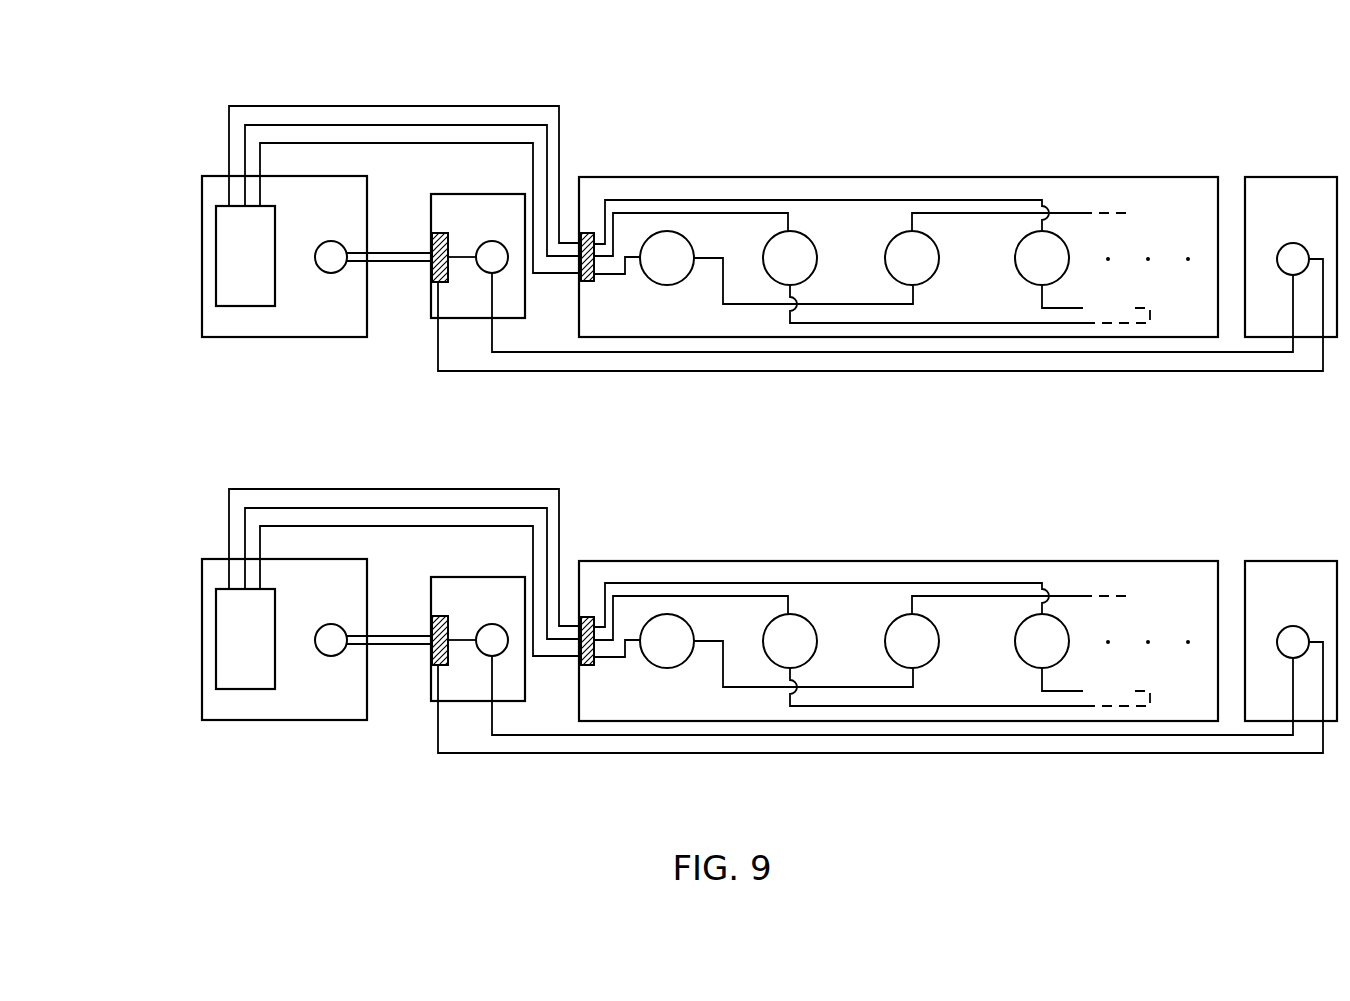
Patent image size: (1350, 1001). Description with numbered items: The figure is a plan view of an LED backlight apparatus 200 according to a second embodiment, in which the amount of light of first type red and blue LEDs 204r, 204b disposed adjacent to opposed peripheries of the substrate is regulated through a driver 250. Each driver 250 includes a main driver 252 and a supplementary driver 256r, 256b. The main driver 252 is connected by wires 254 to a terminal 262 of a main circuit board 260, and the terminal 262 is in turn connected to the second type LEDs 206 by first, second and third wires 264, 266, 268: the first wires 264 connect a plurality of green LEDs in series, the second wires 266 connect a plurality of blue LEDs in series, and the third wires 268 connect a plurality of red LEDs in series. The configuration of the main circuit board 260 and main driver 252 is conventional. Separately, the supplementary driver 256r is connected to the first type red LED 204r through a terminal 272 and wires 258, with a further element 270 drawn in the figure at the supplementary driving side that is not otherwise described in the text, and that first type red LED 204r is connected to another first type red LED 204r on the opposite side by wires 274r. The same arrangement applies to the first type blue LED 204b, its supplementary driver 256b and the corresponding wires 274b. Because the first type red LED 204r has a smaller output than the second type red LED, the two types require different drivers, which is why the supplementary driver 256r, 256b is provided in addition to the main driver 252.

The LED backlight apparatus 200 is at (957, 74).
The first type red LED 204r is at (491, 241).
The first type blue LED 204b is at (491, 624).
The second type LEDs 206 is at (1018, 247).
The driver 250 is at (201, 198).
The main driver 252 is at (215, 255).
The wires 254 is at (307, 105).
The supplementary driver 256r is at (329, 241).
The supplementary driver 256b is at (328, 624).
The wires 258 is at (400, 262).
The main circuit board 260 is at (1149, 176).
The terminal 262 is at (590, 233).
The first wires 264 is at (632, 250).
The second wires 266 is at (665, 213).
The third wires 268 is at (982, 200).
The driving unit 270 is at (445, 194).
The terminal 272 is at (431, 238).
The wires 274r is at (1131, 372).
The wires 274b is at (655, 754).